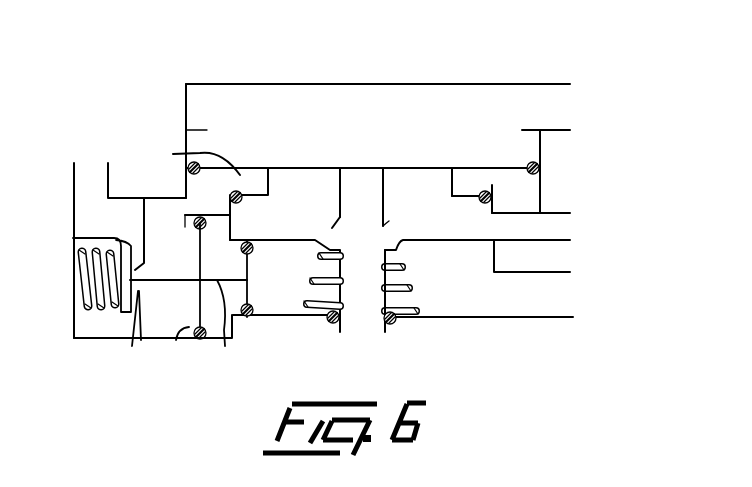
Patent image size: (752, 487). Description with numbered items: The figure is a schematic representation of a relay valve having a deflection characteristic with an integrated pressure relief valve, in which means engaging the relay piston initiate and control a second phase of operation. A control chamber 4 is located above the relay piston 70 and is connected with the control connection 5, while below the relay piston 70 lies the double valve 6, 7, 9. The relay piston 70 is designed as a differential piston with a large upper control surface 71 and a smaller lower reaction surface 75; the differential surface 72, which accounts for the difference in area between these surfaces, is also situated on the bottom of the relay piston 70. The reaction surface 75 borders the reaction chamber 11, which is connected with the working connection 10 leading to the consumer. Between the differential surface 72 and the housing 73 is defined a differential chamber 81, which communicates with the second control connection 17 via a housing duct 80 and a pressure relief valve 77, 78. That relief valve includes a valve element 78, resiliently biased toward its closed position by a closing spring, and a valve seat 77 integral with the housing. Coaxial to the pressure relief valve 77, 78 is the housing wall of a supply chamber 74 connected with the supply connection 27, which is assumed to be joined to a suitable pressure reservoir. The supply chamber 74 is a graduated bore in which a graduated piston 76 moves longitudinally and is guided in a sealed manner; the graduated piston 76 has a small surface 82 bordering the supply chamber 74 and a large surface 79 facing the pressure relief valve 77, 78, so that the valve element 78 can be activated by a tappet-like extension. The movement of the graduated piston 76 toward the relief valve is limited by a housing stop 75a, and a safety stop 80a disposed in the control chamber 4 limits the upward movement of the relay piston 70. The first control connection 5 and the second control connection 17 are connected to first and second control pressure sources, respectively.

The control chamber 4 is at (352, 101).
The control connection 5 is at (557, 104).
The double valve 6 is at (397, 217).
The double valve 7 is at (400, 246).
The double valve 9 is at (385, 297).
The working connection 10 is at (557, 226).
The reaction chamber 11 is at (426, 191).
The second control connection 17 is at (90, 179).
The supply connection 27 is at (557, 294).
The relay piston 70 is at (391, 167).
The upper control surface 71 is at (466, 167).
The differential surface 72 is at (503, 170).
The housing 73 is at (542, 190).
The supply chamber 74 is at (466, 287).
The reaction surface 75 is at (320, 168).
The housing stop 75a is at (183, 349).
The graduated piston 76 is at (226, 326).
The valve seat 77 is at (184, 285).
The valve element 78 is at (73, 237).
The large surface 79 is at (200, 257).
The housing duct 80 is at (186, 208).
The safety stop 80a is at (530, 132).
The differential chamber 81 is at (197, 159).
The small surface 82 is at (247, 290).